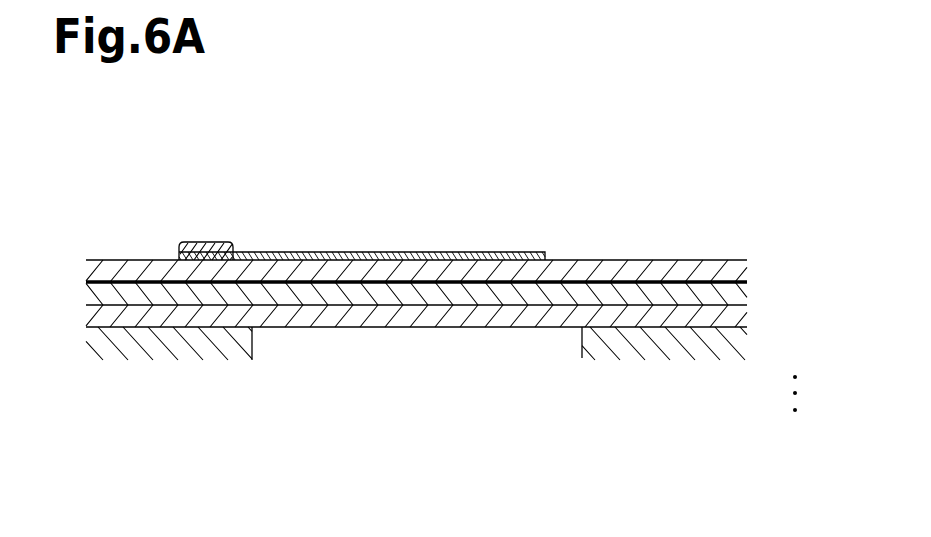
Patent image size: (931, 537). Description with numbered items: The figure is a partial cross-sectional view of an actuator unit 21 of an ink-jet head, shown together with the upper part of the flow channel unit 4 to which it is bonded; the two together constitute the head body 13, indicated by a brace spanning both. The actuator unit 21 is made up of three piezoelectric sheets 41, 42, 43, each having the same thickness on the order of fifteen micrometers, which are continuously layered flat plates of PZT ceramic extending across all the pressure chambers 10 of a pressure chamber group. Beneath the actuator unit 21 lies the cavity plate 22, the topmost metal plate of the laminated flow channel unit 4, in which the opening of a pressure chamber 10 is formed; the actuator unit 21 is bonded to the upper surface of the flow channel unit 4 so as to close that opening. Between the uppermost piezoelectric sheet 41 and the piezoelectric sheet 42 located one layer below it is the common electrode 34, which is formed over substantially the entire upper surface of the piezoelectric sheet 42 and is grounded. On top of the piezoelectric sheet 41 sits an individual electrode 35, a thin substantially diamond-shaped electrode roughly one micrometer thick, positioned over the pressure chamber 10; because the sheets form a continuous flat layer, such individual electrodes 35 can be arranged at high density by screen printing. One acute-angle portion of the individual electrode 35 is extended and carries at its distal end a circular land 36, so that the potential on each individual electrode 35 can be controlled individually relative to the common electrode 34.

The flow channel unit 4 is at (467, 388).
The pressure chamber 10 is at (580, 348).
The head body 13 is at (494, 312).
The actuator unit 21 is at (470, 256).
The cavity plate 22 is at (446, 388).
The common electrode 34 is at (605, 278).
The individual electrode 35 is at (329, 224).
The land 36 is at (203, 242).
The piezoelectric sheet 41 is at (733, 268).
The piezoelectric sheet 42 is at (732, 292).
The piezoelectric sheet 43 is at (446, 319).